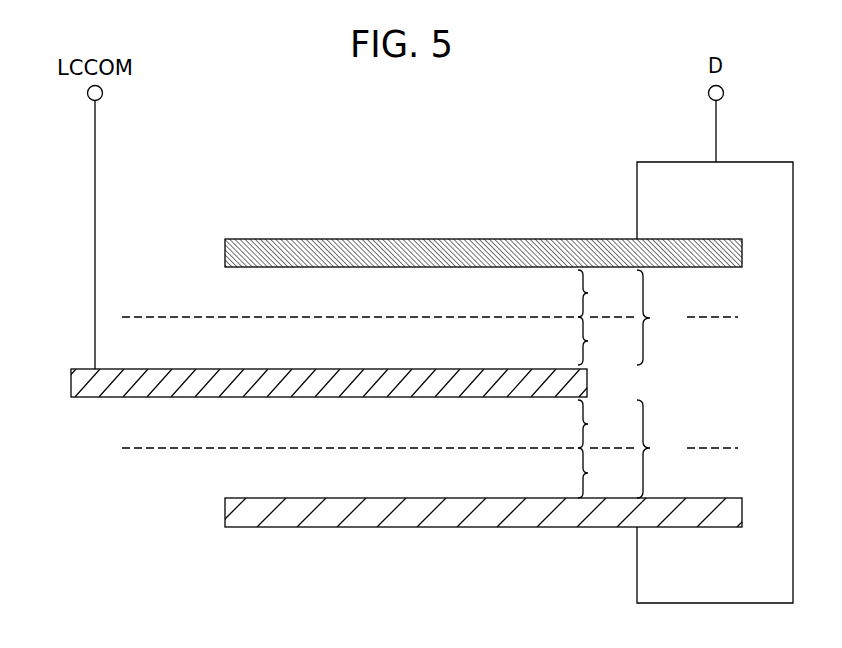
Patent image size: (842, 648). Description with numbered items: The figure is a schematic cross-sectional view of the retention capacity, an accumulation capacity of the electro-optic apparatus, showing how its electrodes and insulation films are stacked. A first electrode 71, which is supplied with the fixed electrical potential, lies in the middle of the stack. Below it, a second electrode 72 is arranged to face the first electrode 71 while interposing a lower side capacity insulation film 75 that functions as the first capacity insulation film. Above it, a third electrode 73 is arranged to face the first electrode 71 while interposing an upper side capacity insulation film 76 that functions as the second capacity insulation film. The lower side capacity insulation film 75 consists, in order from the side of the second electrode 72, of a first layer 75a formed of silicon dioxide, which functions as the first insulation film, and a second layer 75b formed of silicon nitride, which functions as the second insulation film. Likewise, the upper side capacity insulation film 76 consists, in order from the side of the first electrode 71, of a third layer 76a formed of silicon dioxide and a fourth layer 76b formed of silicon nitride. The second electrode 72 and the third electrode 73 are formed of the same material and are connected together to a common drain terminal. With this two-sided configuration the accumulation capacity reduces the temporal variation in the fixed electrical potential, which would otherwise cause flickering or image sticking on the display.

The first electrode 71 is at (83, 373).
The second electrode 72 is at (262, 508).
The third electrode 73 is at (268, 239).
The lower side capacity insulation film 75 is at (658, 449).
The first layer 75a is at (503, 473).
The second layer 75b is at (503, 424).
The upper side capacity insulation film 76 is at (658, 317).
The third layer 76a is at (503, 341).
The fourth layer 76b is at (503, 293).